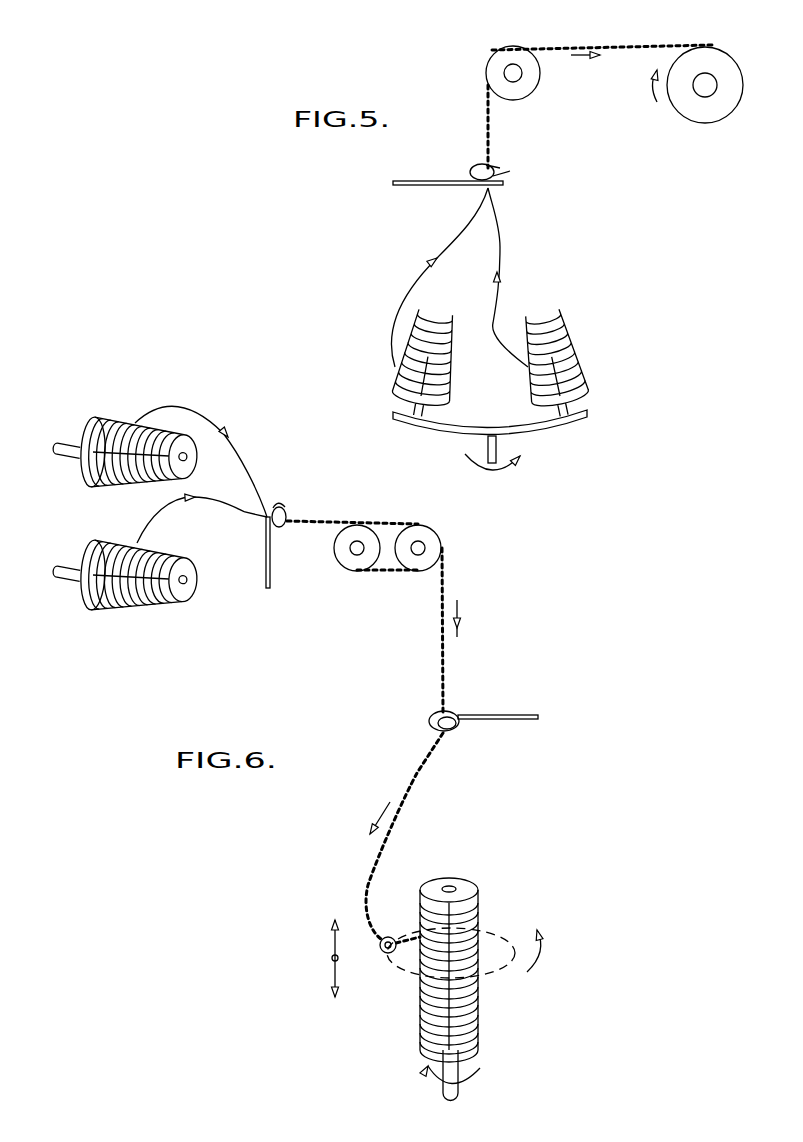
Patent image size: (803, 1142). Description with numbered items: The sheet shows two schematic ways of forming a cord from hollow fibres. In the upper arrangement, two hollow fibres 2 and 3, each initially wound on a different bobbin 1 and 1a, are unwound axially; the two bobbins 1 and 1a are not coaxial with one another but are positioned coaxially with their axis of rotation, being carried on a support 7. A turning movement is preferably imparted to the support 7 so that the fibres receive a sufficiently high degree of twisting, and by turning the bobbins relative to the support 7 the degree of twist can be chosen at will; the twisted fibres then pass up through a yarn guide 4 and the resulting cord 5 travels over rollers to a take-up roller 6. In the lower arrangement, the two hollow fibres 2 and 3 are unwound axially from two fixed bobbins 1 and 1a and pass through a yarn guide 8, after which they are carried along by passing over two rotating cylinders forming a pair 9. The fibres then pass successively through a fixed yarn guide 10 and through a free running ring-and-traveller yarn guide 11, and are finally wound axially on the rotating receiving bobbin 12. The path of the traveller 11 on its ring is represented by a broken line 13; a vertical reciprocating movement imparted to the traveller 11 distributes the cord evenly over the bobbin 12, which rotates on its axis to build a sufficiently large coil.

In FIG. 5, the bobbin 1 is at (580, 338).
In FIG. 6, the bobbin 1 is at (109, 415).
In FIG. 5, the bobbin 1a is at (396, 370).
In FIG. 6, the bobbin 1a is at (143, 607).
In FIG. 5, the hollow fibre 2 is at (455, 241).
In FIG. 6, the hollow fibre 2 is at (210, 413).
In FIG. 5, the hollow fibre 3 is at (503, 245).
In FIG. 6, the hollow fibre 3 is at (227, 507).
In FIG. 5, the thread guide eyelet 4 is at (435, 180).
In FIG. 5, the combined yarn 5 is at (485, 107).
In FIG. 5, the take-up roller 6 is at (687, 122).
In FIG. 5, the support 7 is at (568, 428).
In FIG. 6, the yarn guide 8 is at (263, 573).
In FIG. 6, the pair of rotating cylinders 9 is at (409, 575).
In FIG. 6, the fixed yarn guide 10 is at (513, 713).
In FIG. 6, the ring-and-traveller yarn guide 11 is at (384, 955).
In FIG. 6, the receiving bobbin 12 is at (485, 1040).
In FIG. 6, the broken line 13 is at (497, 975).